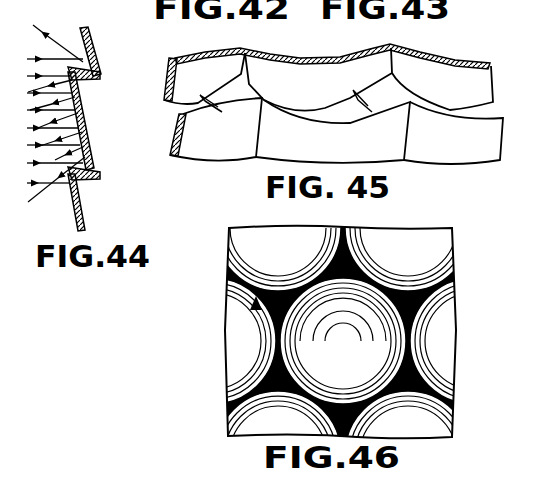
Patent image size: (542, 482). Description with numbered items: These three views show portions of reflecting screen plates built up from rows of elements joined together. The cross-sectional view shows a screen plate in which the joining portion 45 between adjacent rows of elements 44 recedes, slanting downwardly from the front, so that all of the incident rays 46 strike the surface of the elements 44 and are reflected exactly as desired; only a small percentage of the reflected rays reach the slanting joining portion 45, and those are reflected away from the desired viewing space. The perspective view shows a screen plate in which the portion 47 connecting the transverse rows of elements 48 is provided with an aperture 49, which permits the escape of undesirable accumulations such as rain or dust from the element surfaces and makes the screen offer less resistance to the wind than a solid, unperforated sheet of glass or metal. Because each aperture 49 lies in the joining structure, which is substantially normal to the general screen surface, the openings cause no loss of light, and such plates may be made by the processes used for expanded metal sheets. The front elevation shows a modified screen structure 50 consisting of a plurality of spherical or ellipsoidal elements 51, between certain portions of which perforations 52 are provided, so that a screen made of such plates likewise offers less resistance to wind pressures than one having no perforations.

In FIG. 44, the elements 44 is at (67, 72).
In FIG. 44, the joining portion 45 is at (90, 67).
In FIG. 44, the incident rays 46 is at (30, 165).
In FIG. 45, the portion 47 is at (298, 100).
In FIG. 45, the elements 48 is at (333, 106).
In FIG. 45, the aperture 49 is at (183, 108).
In FIG. 46, the screen structure 50 is at (343, 323).
In FIG. 46, the spherical or ellipsoidal elements 51 is at (200, 317).
In FIG. 46, the perforations 52 is at (260, 305).